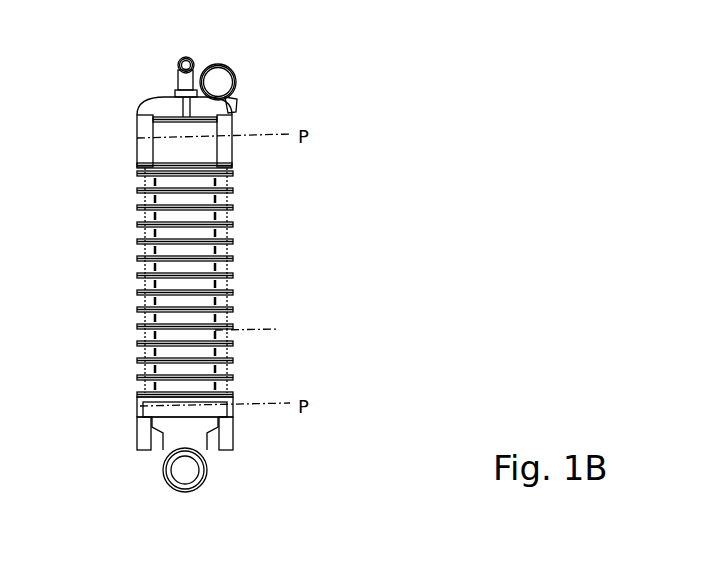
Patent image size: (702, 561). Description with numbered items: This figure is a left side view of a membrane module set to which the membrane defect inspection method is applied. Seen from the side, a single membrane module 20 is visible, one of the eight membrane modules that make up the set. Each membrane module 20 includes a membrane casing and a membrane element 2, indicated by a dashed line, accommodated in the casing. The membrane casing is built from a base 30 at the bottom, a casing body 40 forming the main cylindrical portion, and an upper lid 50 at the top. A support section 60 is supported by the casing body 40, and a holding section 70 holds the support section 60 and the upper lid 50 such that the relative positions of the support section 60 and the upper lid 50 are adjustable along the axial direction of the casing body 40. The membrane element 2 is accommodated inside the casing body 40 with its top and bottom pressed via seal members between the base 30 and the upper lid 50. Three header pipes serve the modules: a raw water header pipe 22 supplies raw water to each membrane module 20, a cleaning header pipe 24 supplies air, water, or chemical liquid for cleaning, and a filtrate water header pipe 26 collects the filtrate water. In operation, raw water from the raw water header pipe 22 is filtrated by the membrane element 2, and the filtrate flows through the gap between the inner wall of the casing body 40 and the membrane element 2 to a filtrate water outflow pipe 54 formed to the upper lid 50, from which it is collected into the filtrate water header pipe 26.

The membrane element 2 is at (261, 327).
The membrane module 20 is at (250, 197).
The raw water header pipe 22 is at (207, 472).
The cleaning header pipe 24 is at (189, 57).
The filtrate water header pipe 26 is at (232, 66).
The base 30 is at (192, 443).
The casing body 40 is at (233, 279).
The upper lid 50 is at (205, 116).
The filtrate water outflow pipe 54 is at (233, 108).
The support section 60 is at (152, 110).
The holding section 70 is at (177, 90).